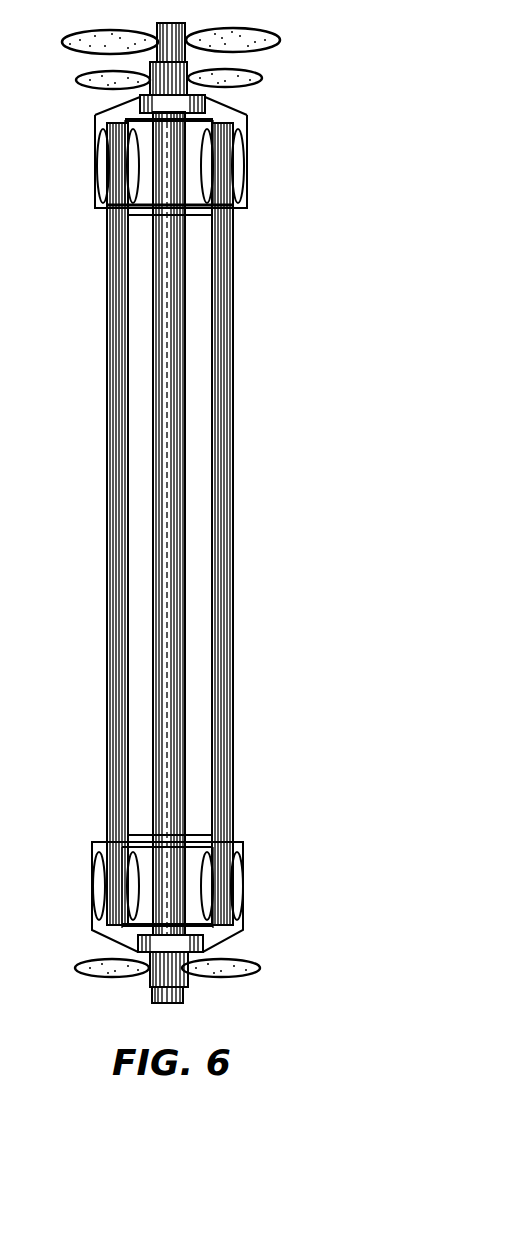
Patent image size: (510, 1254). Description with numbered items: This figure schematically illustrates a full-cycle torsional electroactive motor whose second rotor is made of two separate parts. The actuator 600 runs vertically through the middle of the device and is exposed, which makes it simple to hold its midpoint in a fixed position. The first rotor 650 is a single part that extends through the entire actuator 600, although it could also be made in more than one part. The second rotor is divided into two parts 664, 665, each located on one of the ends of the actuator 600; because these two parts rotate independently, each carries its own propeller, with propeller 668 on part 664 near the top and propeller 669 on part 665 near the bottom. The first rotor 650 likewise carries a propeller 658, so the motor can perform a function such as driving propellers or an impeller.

The actuator 600 is at (225, 537).
The first rotor 650 is at (175, 412).
The propeller 658 is at (280, 37).
The propeller 668 is at (262, 78).
The first part of second rotor 664 is at (245, 203).
The second part of second rotor 665 is at (243, 872).
The propeller 669 is at (258, 965).